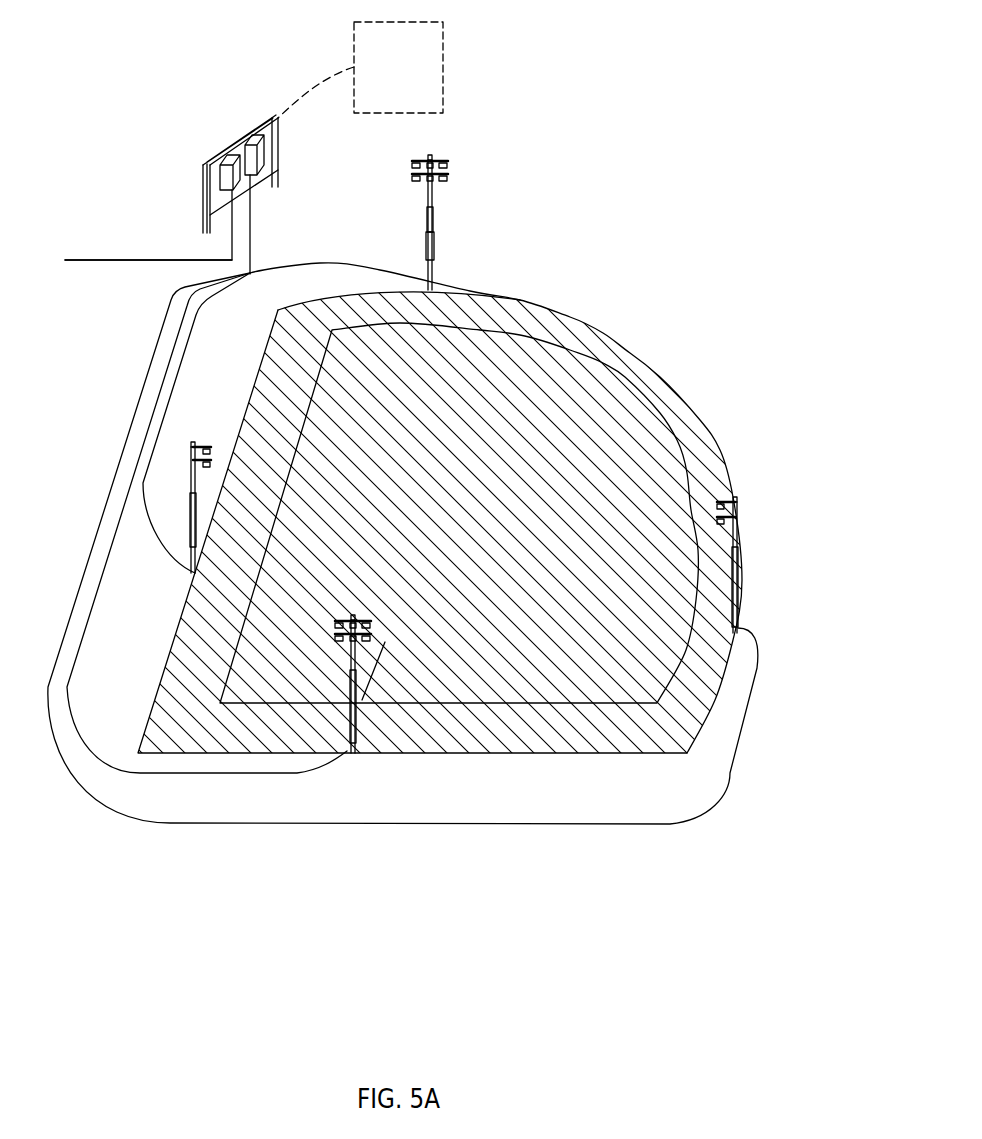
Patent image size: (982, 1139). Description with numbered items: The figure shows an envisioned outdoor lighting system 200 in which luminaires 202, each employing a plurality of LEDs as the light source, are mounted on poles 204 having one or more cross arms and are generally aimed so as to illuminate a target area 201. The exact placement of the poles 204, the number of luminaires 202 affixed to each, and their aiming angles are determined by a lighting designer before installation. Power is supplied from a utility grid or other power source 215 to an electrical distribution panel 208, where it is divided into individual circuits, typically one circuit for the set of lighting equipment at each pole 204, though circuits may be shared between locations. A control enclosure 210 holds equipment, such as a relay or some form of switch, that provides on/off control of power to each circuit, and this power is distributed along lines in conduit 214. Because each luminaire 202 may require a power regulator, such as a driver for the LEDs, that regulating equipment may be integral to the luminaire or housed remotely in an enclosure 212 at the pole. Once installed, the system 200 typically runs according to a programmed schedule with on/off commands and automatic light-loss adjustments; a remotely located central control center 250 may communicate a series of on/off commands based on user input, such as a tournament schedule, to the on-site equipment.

The outdoor lighting system 200 is at (695, 168).
The target area 201 is at (487, 512).
The luminaire 202 is at (450, 163).
The pole 204 is at (432, 212).
The electrical distribution panel 208 is at (234, 162).
The control enclosure 210 is at (263, 160).
The enclosure 212 is at (432, 248).
The conduit 214 is at (163, 330).
The power source 215 is at (157, 260).
The central control center 250 is at (445, 43).